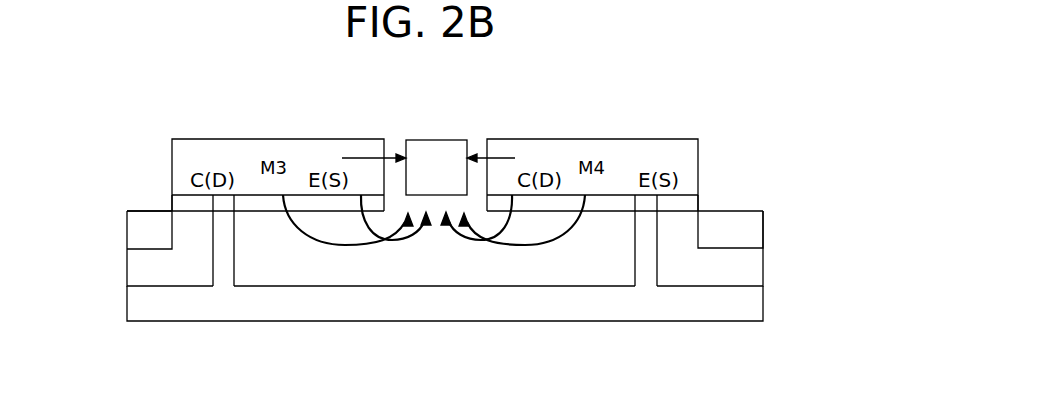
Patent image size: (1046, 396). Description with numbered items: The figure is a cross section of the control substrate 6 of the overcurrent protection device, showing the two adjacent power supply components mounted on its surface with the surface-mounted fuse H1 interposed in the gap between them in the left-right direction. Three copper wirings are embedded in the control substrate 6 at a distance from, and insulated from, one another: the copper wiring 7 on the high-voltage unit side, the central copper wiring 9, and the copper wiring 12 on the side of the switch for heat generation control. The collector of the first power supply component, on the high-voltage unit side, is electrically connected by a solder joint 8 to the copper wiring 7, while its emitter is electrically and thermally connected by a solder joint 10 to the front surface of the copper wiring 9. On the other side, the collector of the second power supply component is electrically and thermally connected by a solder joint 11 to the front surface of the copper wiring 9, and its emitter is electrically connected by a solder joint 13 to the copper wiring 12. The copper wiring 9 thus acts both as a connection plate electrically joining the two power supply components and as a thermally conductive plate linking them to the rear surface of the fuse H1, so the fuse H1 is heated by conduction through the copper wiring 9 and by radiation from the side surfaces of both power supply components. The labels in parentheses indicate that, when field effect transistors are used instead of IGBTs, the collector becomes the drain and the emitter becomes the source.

The control substrate 6 is at (750, 300).
The copper wiring 7 is at (138, 263).
The solder joint 8 is at (180, 206).
The copper wiring 9 is at (577, 270).
The solder joint 10 is at (250, 203).
The solder joint 11 is at (618, 205).
The copper wiring 12 is at (750, 264).
The solder joint 13 is at (688, 206).
The fuse H1 is at (435, 139).